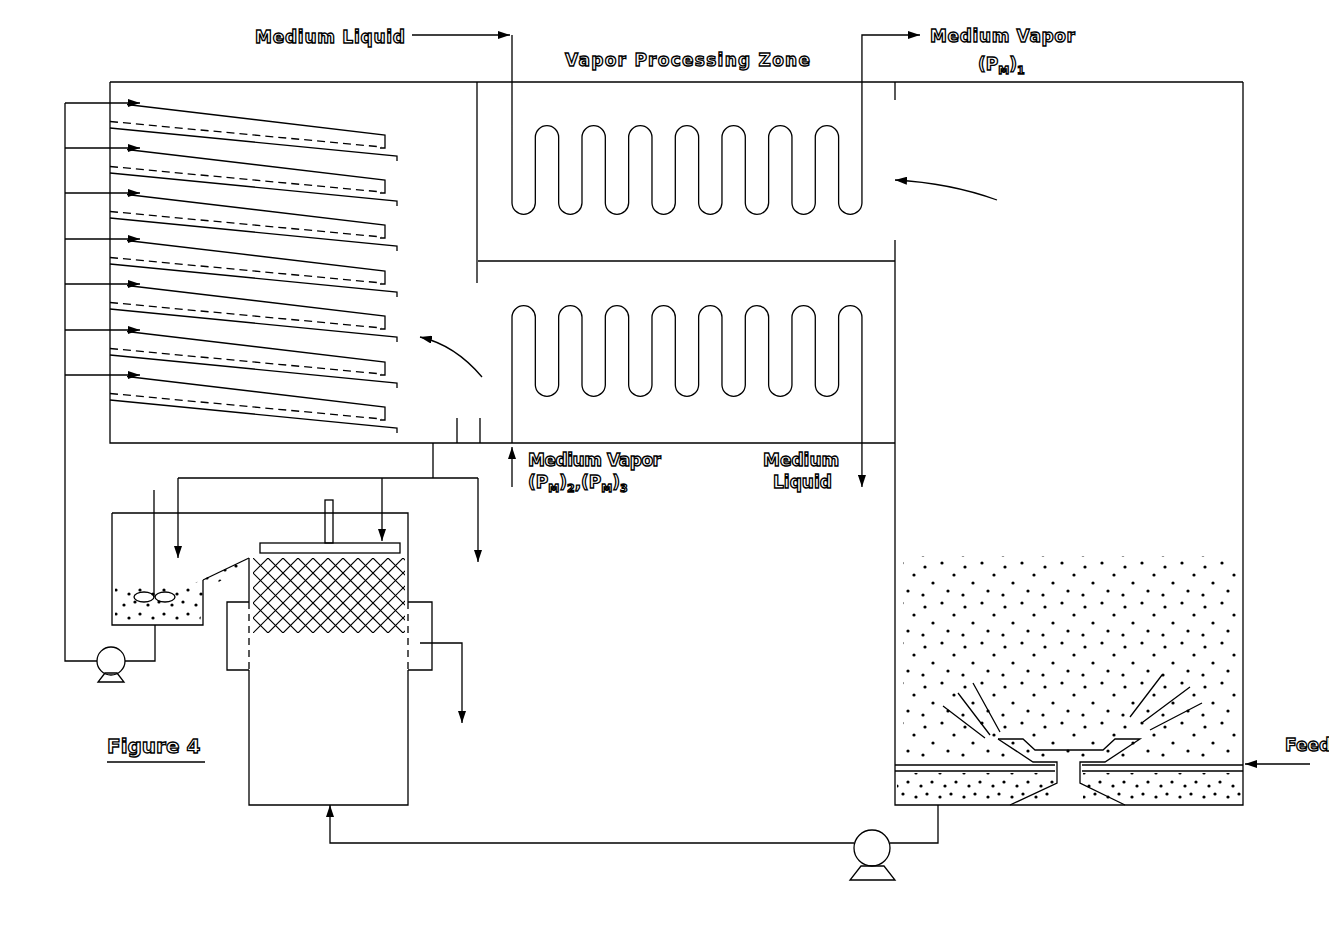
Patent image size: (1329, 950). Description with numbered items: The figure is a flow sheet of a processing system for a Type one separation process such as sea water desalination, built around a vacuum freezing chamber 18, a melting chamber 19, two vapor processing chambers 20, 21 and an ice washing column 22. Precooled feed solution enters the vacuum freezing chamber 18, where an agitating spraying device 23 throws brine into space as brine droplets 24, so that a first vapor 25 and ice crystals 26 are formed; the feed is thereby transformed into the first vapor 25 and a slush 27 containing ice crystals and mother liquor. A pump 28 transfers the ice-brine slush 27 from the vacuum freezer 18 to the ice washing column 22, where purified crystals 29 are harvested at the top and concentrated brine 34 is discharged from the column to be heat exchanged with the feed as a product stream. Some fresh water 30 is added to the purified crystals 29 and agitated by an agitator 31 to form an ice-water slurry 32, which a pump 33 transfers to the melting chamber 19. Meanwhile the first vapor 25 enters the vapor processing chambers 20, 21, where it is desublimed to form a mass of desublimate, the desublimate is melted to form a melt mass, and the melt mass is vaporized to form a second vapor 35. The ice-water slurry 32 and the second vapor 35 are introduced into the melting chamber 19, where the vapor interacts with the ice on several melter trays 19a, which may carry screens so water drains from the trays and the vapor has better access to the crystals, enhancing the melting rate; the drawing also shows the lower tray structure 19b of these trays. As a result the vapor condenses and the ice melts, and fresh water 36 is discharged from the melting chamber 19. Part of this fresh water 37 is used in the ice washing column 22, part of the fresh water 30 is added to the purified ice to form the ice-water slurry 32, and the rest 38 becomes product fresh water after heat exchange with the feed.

The vacuum freezing chamber 18 is at (1108, 321).
The melting chamber 19 is at (425, 112).
The melter trays 19a is at (340, 186).
The melting tray 19b is at (323, 281).
The vapor processing chamber 20 is at (698, 254).
The vapor processing chamber 21 is at (698, 287).
The ice washing column 22 is at (276, 519).
The agitating spraying device 23 is at (1120, 749).
The brine droplets 24 is at (927, 622).
The first vapor 25 is at (946, 177).
The ice crystals 26 is at (897, 777).
The slush 27 is at (940, 820).
The pump 28 is at (862, 841).
The purified crystals 29 is at (233, 558).
The fresh water 30 is at (194, 518).
The agitator 31 is at (150, 573).
The ice-water slurry 32 is at (155, 643).
The pump 33 is at (128, 676).
The concentrated brine 34 is at (515, 717).
The second vapor 35 is at (451, 348).
The fresh water 36 is at (329, 448).
The fresh water 37 is at (397, 509).
The product fresh water 38 is at (485, 541).